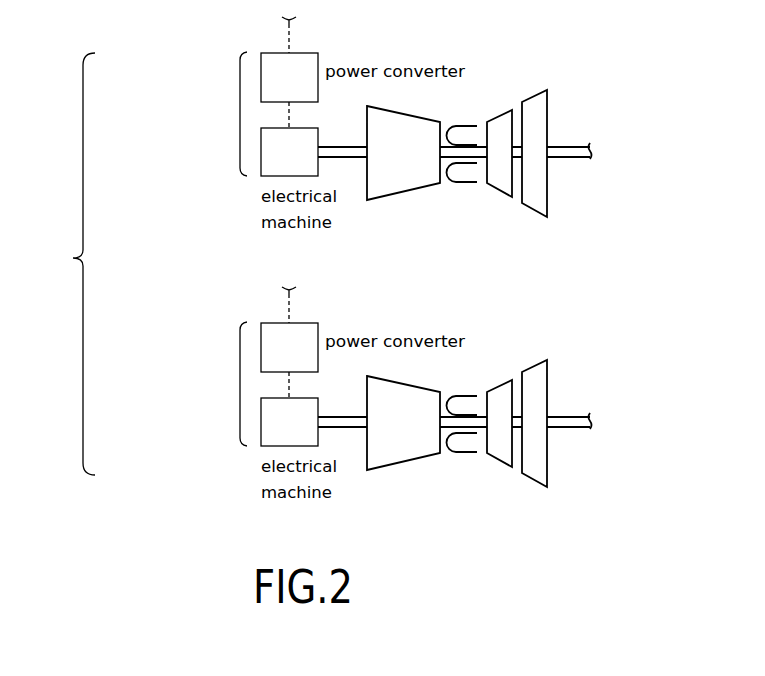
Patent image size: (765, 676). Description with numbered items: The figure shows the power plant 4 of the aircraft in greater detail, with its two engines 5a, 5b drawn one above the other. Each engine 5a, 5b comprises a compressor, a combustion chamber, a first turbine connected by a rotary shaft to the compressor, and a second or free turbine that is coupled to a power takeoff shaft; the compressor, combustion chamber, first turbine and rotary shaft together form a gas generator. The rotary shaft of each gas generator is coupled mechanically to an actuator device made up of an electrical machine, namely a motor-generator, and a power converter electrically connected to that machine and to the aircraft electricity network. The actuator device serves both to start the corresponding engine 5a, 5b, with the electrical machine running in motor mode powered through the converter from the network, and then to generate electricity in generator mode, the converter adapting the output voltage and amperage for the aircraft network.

The power plant 4 is at (72, 264).
The engine 5a is at (190, 144).
The engine 5b is at (190, 433).